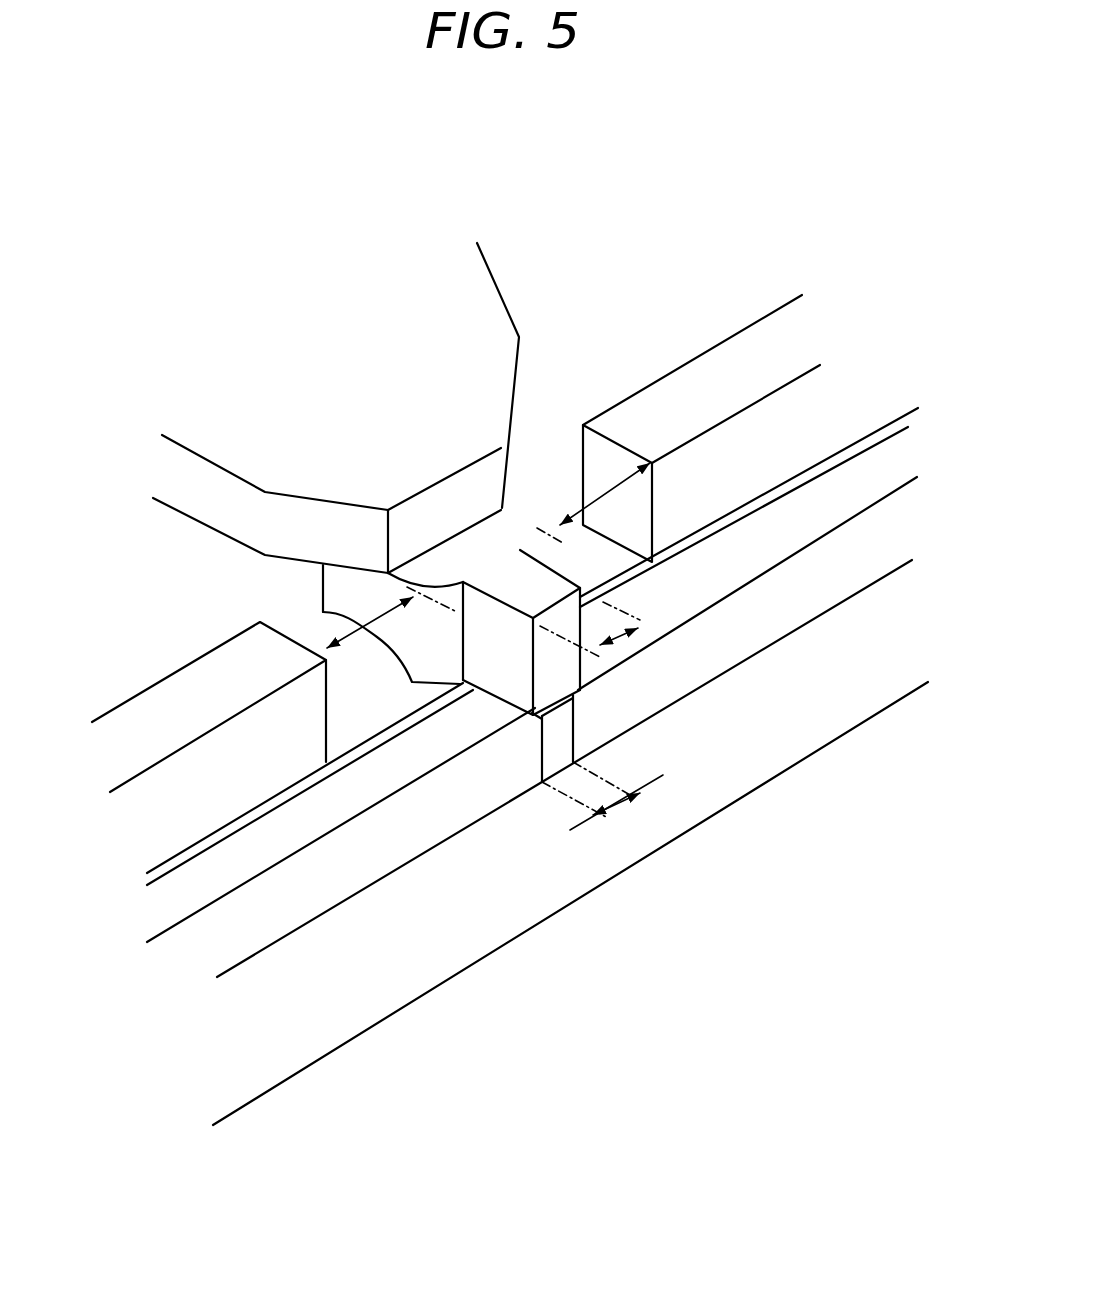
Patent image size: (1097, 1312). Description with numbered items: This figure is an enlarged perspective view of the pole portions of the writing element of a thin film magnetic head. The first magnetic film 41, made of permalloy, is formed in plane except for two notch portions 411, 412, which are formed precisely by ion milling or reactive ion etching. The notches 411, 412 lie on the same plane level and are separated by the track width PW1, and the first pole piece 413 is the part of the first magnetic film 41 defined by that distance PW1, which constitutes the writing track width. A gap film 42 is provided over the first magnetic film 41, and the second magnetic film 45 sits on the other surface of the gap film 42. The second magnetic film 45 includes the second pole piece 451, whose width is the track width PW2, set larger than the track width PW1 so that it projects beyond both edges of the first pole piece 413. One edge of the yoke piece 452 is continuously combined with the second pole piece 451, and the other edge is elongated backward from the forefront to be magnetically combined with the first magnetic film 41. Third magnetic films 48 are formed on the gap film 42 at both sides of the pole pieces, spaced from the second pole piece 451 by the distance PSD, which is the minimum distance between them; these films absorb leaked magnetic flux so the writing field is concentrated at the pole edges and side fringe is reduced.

The first magnetic film 41 is at (518, 769).
The gap film 42 is at (290, 792).
The notch portion 411 is at (253, 903).
The notch portion 412 is at (808, 563).
The first pole piece 413 is at (567, 725).
The second magnetic film 45 is at (377, 402).
The second pole piece 451 is at (513, 583).
The yoke piece 452 is at (468, 350).
The third magnetic film 48 is at (207, 690).
The distance PSD is at (597, 490).
The track width PW1 is at (617, 803).
The track width PW2 is at (628, 637).